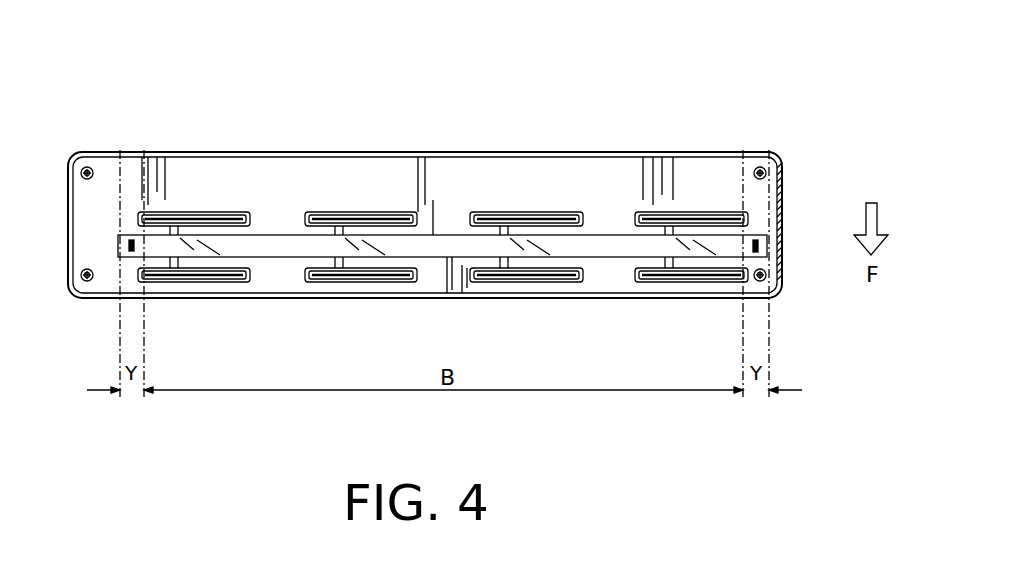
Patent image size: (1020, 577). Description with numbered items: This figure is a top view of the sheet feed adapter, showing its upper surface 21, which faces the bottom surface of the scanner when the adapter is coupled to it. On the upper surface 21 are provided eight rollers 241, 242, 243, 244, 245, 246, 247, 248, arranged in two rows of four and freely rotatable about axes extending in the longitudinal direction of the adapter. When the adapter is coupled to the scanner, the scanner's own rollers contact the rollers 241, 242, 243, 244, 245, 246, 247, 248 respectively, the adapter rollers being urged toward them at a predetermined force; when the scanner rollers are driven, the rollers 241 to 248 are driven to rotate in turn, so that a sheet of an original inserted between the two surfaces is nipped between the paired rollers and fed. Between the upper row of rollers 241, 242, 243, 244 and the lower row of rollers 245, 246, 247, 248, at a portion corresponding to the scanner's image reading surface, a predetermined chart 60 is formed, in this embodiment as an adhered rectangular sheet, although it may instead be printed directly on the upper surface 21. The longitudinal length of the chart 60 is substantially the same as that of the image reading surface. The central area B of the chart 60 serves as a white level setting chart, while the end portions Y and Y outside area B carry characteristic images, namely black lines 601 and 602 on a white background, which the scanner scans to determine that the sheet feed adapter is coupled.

The upper surface 21 is at (104, 292).
The chart 60 is at (277, 258).
The black line 601 is at (118, 246).
The black line 602 is at (763, 248).
The roller 241 is at (205, 212).
The roller 242 is at (360, 212).
The roller 243 is at (530, 212).
The roller 244 is at (692, 212).
The roller 245 is at (200, 282).
The roller 246 is at (360, 282).
The roller 247 is at (527, 282).
The roller 248 is at (690, 282).